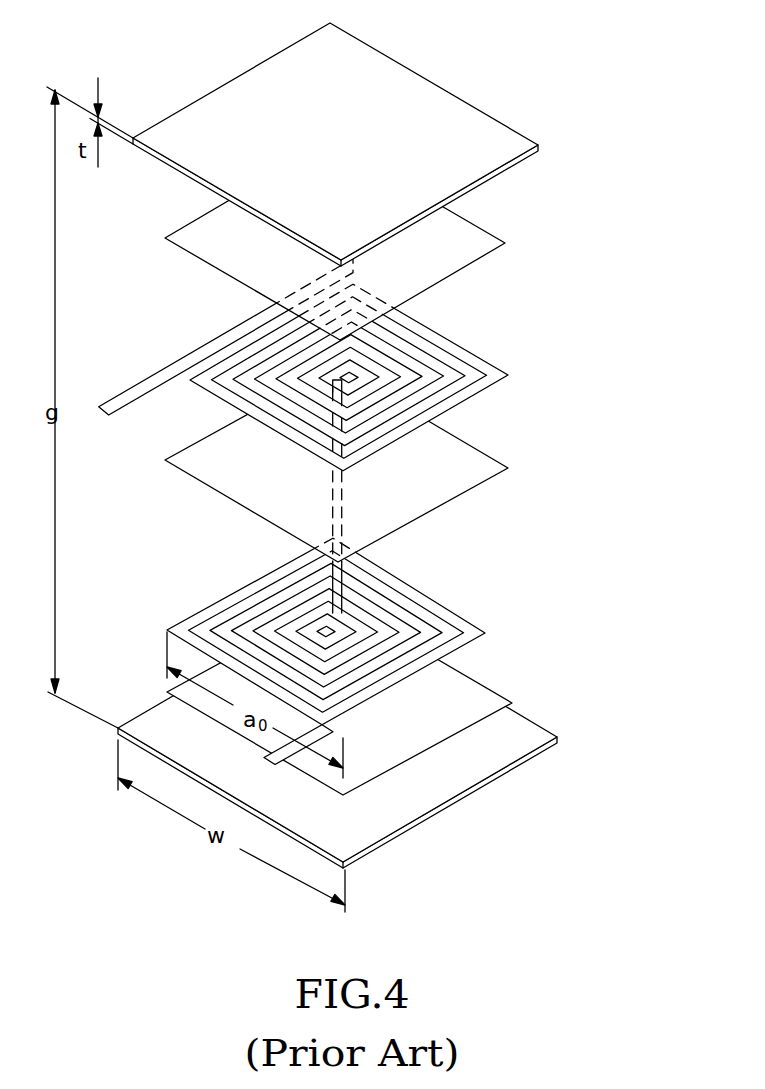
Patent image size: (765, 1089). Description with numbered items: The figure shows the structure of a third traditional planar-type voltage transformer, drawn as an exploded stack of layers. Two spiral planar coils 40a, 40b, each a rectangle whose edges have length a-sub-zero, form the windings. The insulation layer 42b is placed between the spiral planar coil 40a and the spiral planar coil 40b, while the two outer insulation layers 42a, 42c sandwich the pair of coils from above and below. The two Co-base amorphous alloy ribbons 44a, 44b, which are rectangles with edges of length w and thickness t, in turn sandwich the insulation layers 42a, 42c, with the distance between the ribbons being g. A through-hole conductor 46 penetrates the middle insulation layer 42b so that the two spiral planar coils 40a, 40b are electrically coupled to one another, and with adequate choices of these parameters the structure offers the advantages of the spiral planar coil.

The Co-base amorphous alloy ribbon 44a is at (511, 139).
The insulation layer 42a is at (483, 241).
The spiral planar coil 40a is at (495, 376).
The insulation layer 42b is at (460, 450).
The through-hole conductor 46 is at (343, 485).
The spiral planar coil 40b is at (497, 633).
The insulation layer 42c is at (477, 693).
The Co-base amorphous alloy ribbon 44b is at (525, 729).